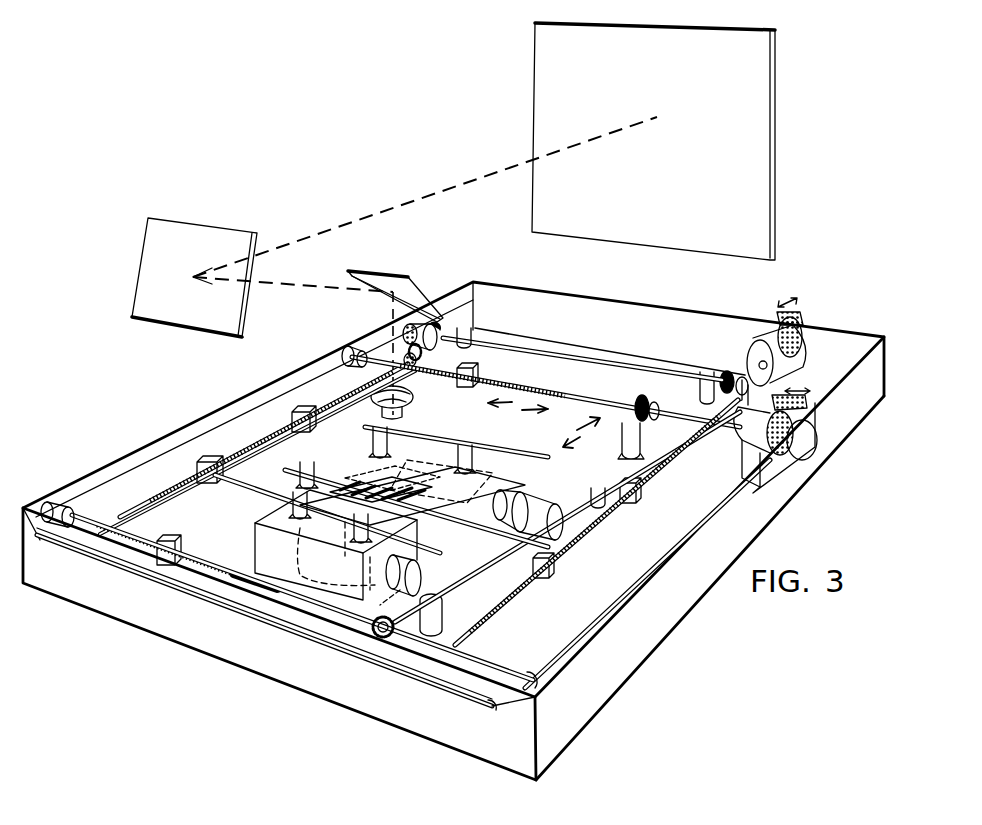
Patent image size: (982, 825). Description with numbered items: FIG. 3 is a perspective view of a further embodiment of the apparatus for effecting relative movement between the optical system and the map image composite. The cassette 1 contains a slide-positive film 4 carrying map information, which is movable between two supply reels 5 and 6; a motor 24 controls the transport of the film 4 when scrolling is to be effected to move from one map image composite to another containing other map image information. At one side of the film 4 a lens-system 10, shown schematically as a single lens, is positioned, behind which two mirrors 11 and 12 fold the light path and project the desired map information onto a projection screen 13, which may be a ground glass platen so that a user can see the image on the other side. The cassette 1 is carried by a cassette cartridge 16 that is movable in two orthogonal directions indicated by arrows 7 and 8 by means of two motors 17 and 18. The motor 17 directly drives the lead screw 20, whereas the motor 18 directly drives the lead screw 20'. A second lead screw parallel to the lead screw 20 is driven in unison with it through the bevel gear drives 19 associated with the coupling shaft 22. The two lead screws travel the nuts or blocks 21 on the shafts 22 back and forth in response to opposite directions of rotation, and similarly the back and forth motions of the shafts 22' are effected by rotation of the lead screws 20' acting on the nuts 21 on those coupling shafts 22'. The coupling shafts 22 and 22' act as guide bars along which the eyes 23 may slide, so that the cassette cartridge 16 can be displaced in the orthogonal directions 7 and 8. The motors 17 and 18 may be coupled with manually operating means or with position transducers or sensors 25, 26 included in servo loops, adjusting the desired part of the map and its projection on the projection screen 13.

The cassette 1 is at (432, 470).
The slide-positive film 4 is at (310, 530).
The supply reel 5 is at (377, 572).
The supply reel 6 is at (503, 470).
The arrow 7 is at (530, 403).
The arrow 8 is at (568, 440).
The lens-system 10 is at (375, 392).
The mirror 11 is at (420, 278).
The mirror 12 is at (160, 307).
The projection screen 13 is at (548, 115).
The cassette cartridge 16 is at (297, 597).
The motor 17 is at (800, 442).
The motor 18 is at (782, 342).
The bevel gear drive 19 is at (393, 640).
The lead screw 20 is at (418, 484).
The lead screw 20' is at (596, 522).
The nut or block 21 is at (205, 462).
The coupling shaft 22 is at (314, 514).
The coupling shaft 22' is at (621, 519).
The eye 23 is at (352, 490).
The motor 24 is at (552, 553).
The position transducer or sensor 25 is at (817, 427).
The position transducer or sensor 26 is at (806, 318).